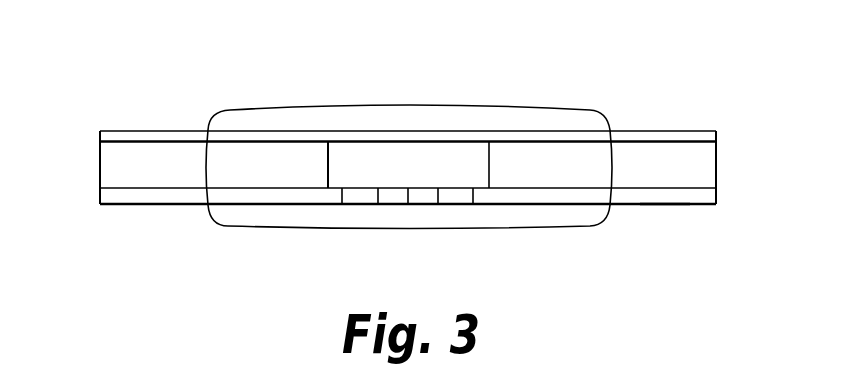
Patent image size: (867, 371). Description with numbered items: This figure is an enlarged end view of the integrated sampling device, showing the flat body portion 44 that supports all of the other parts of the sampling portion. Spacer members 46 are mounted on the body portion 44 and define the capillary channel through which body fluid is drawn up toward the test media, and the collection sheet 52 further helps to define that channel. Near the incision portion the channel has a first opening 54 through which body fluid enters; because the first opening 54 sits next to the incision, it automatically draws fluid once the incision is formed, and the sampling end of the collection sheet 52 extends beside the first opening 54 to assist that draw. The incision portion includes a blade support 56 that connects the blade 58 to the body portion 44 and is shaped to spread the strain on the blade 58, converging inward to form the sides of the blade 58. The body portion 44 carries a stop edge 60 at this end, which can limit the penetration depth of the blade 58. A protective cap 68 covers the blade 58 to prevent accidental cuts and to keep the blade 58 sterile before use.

The body portion 44 is at (143, 205).
The spacer members 46 is at (110, 160).
The collection sheet 52 is at (157, 134).
The first opening 54 is at (362, 163).
The blade support 56 is at (455, 205).
The blade 58 is at (403, 198).
The stop edge 60 is at (665, 201).
The protective cap 68 is at (443, 107).